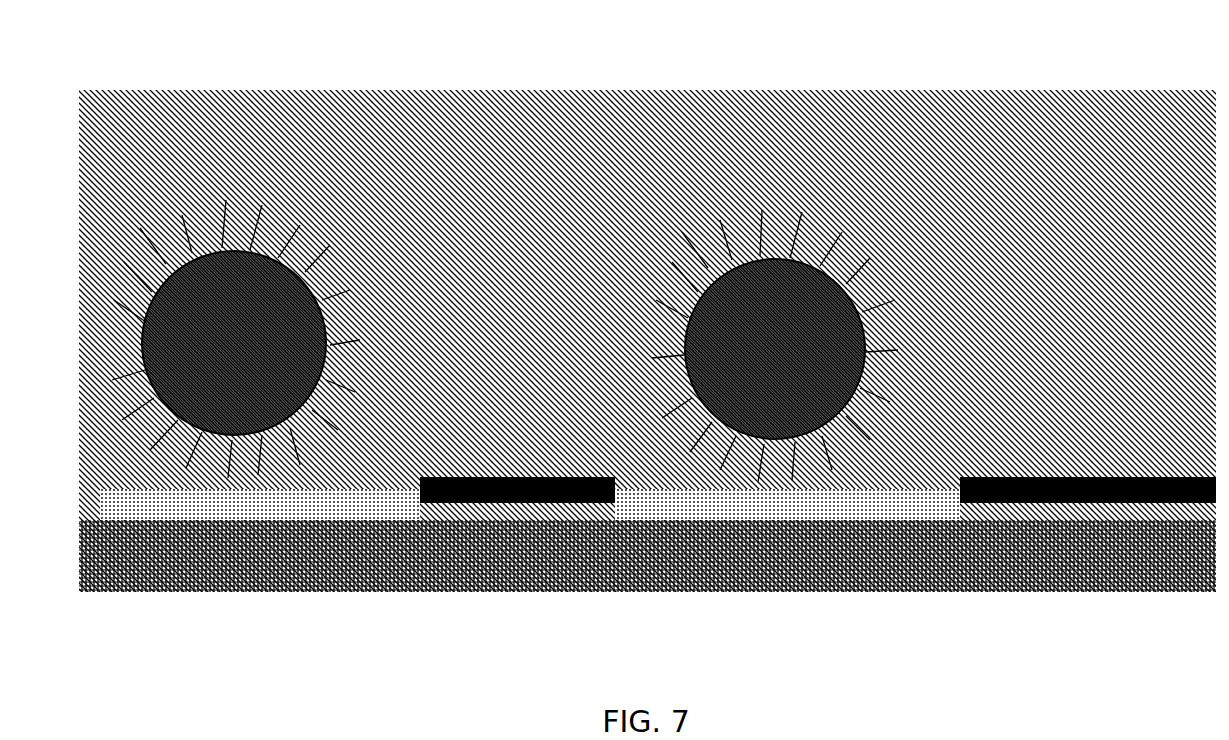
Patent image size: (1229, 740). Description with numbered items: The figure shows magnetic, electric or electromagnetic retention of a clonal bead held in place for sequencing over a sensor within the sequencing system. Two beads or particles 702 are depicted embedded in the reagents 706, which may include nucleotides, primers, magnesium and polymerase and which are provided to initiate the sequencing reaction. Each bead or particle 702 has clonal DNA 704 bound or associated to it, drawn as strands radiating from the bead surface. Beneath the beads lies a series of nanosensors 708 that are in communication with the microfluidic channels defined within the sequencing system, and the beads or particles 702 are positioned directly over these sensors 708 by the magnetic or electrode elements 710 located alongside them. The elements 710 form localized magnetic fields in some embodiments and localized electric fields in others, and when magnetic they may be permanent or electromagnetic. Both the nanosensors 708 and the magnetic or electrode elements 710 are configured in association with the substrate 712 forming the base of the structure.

The beads or particles 702 is at (230, 252).
The clonal DNA 704 is at (343, 270).
The reagents 706 is at (145, 250).
The nanosensors 708 is at (210, 513).
The magnetic or electrode elements 710 is at (560, 500).
The substrate 712 is at (618, 548).